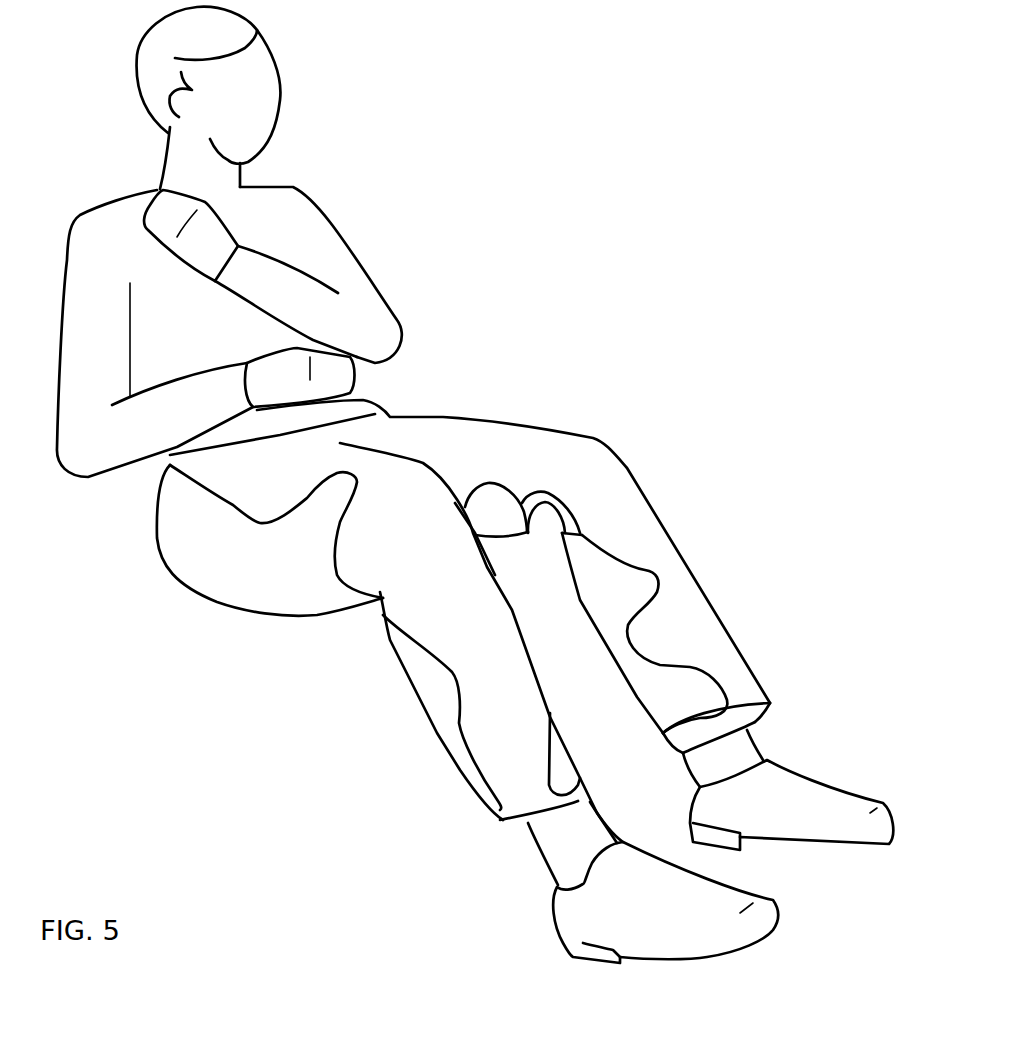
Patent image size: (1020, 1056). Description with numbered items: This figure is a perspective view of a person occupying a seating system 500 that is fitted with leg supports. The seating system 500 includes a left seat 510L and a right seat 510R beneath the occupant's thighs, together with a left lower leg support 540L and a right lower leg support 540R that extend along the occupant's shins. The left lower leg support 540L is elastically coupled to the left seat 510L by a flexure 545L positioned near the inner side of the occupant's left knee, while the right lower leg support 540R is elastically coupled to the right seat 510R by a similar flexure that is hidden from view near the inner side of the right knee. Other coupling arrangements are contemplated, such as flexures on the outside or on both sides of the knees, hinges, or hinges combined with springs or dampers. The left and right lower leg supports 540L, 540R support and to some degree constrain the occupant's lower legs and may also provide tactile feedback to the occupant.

The seating system 500 is at (731, 104).
The left seat 510L is at (495, 485).
The right seat 510R is at (277, 617).
The flexure 545L is at (565, 502).
The left lower leg support 540L is at (690, 667).
The right lower leg support 540R is at (460, 770).